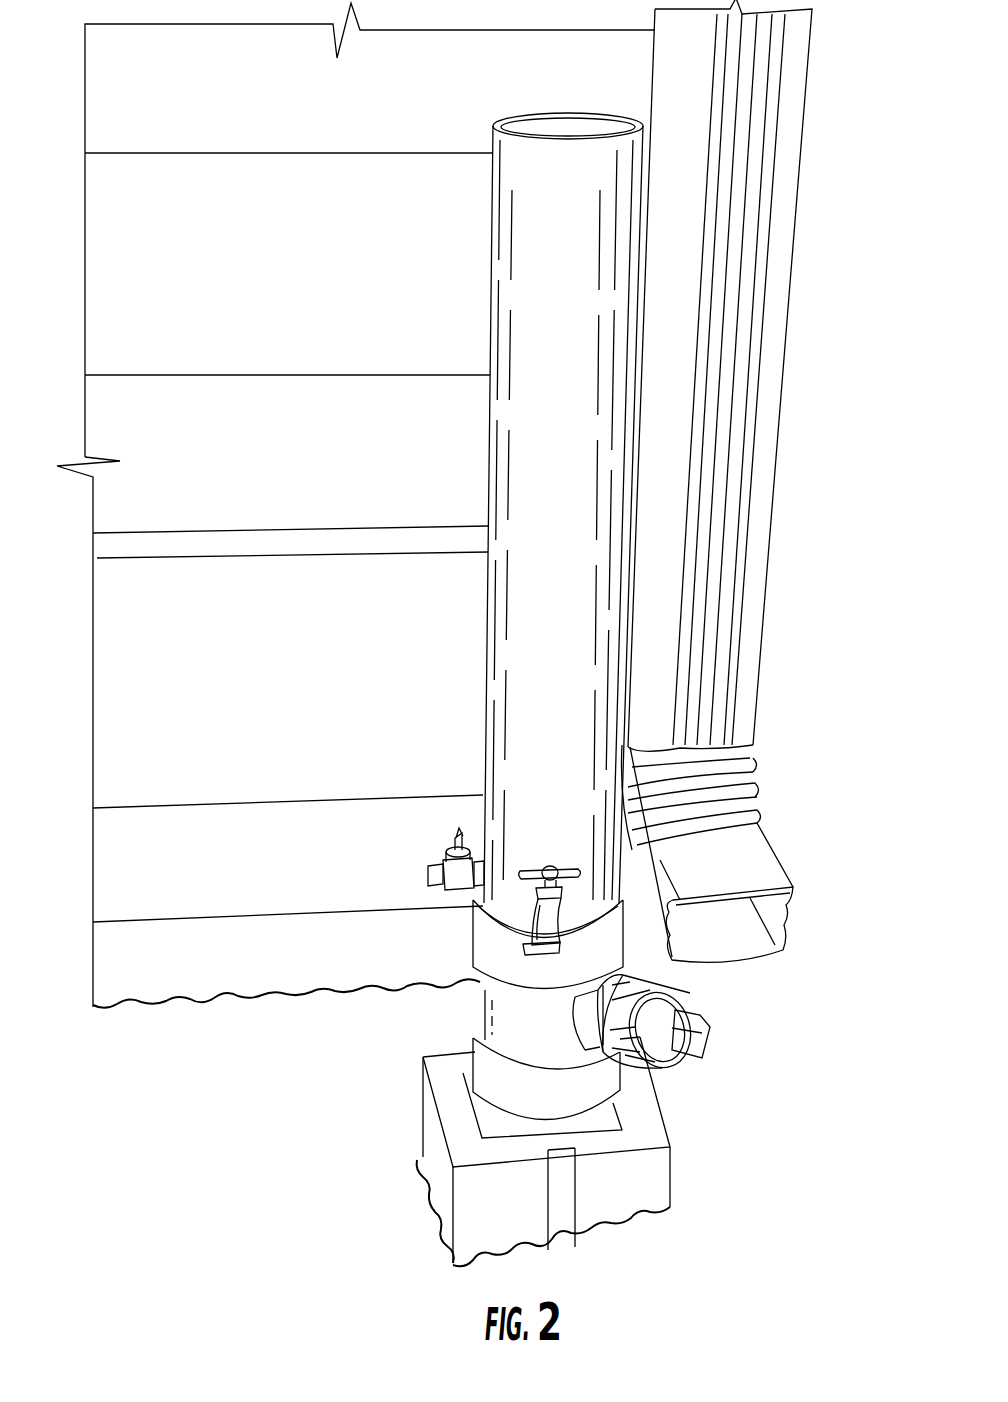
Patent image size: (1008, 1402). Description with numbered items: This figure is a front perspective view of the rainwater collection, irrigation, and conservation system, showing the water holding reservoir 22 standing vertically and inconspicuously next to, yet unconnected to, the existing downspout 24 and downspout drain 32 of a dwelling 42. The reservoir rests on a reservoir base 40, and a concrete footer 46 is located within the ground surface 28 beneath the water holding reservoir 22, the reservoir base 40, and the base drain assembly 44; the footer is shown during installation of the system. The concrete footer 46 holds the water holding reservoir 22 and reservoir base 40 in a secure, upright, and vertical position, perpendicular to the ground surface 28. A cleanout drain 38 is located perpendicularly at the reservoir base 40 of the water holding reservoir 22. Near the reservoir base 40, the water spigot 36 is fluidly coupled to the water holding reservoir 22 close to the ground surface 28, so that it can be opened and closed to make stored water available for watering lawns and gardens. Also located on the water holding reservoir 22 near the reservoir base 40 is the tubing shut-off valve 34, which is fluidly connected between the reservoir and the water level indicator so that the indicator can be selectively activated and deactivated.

The water holding reservoir 22 is at (532, 468).
The downspout 24 is at (738, 372).
The ground surface 28 is at (642, 1262).
The downspout drain 32 is at (716, 928).
The tubing shut-off valve 34 is at (432, 877).
The water spigot 36 is at (500, 928).
The cleanout drain 38 is at (698, 1038).
The reservoir base 40 is at (510, 1018).
The dwelling 42 is at (135, 697).
The base drain assembly 44 is at (664, 1080).
The concrete footer 46 is at (643, 1190).